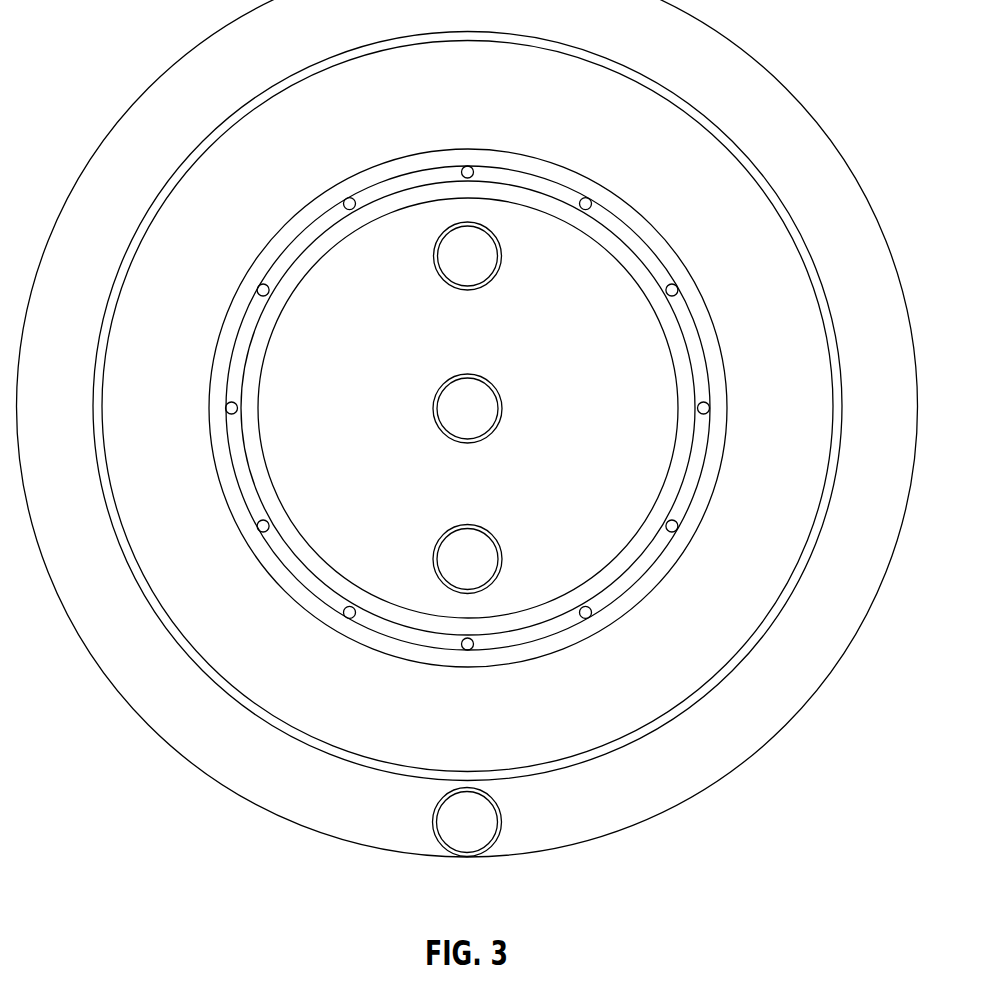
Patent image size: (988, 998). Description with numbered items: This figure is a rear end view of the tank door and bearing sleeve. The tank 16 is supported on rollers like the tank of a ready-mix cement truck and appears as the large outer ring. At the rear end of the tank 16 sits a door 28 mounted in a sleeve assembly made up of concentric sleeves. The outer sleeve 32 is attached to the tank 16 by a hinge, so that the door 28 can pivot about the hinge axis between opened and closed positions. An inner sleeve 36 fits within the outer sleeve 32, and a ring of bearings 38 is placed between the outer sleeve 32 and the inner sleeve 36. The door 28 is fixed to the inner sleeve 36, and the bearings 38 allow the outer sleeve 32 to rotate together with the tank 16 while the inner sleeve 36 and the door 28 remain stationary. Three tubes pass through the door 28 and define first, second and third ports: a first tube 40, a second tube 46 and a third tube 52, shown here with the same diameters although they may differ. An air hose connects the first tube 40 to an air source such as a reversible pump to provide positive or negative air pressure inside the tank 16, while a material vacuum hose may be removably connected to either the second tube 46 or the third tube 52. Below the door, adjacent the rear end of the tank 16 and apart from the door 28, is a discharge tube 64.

The tank 16 is at (702, 48).
The door 28 is at (366, 410).
The outer sleeve 32 is at (522, 163).
The inner sleeve 36 is at (303, 252).
The bearings 38 is at (352, 198).
The first tube 40 is at (495, 277).
The second tube 46 is at (492, 430).
The third tube 52 is at (443, 535).
The discharge tube 64 is at (455, 832).